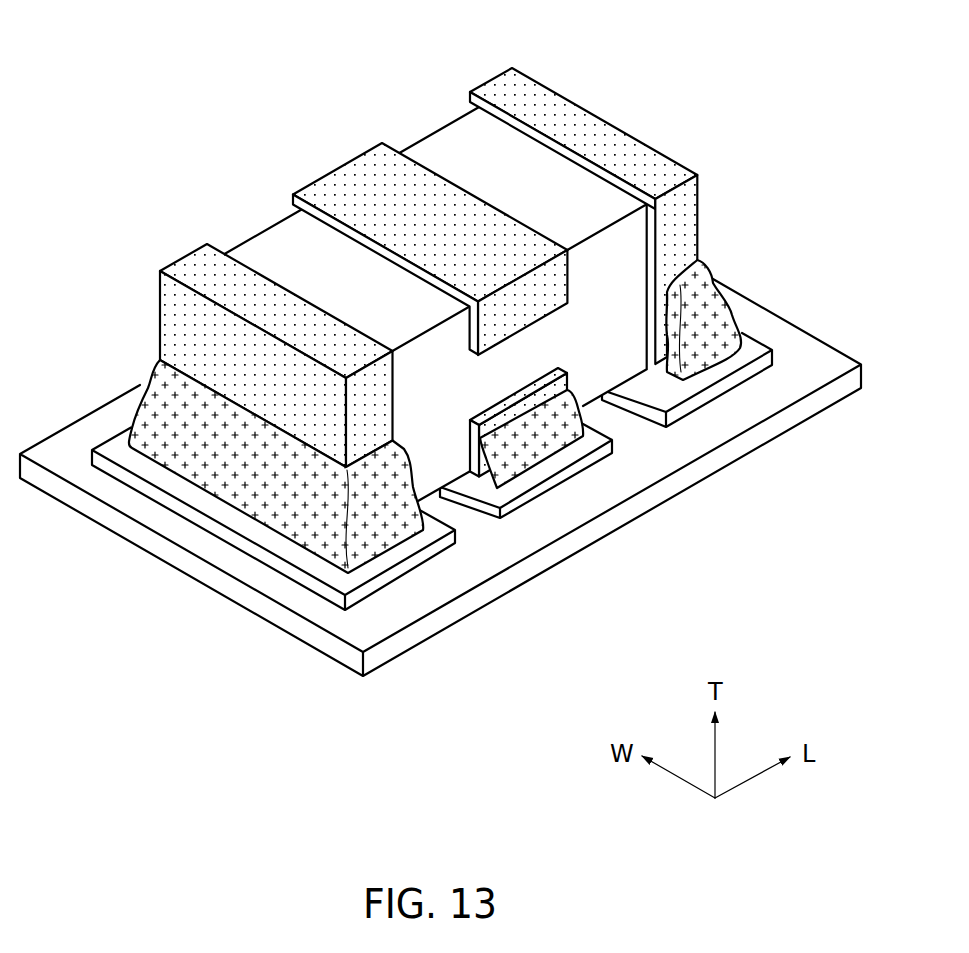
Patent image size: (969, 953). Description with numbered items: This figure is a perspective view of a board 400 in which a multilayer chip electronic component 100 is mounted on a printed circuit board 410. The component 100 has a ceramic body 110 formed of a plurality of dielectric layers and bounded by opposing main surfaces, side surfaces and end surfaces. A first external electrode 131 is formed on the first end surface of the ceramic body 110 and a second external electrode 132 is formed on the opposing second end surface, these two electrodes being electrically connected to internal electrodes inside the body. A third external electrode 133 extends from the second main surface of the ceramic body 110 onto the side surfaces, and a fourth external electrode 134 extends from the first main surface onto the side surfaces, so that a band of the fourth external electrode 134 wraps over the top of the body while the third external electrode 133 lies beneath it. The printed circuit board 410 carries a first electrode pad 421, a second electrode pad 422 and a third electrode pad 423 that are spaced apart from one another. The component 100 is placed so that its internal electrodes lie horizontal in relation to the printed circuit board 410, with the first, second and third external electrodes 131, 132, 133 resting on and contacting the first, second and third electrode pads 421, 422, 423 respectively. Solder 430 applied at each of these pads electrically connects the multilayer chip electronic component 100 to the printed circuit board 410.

The multilayer chip electronic component 100 is at (421, 296).
The ceramic body 110 is at (447, 140).
The first external electrode 131 is at (192, 267).
The second external electrode 132 is at (500, 88).
The third external electrode 133 is at (540, 400).
The fourth external electrode 134 is at (364, 184).
The board 400 is at (440, 426).
The printed circuit board 410 is at (510, 582).
The first electrode pad 421 is at (398, 571).
The second electrode pad 422 is at (710, 390).
The third electrode pad 423 is at (527, 497).
The solder 430 is at (715, 308).